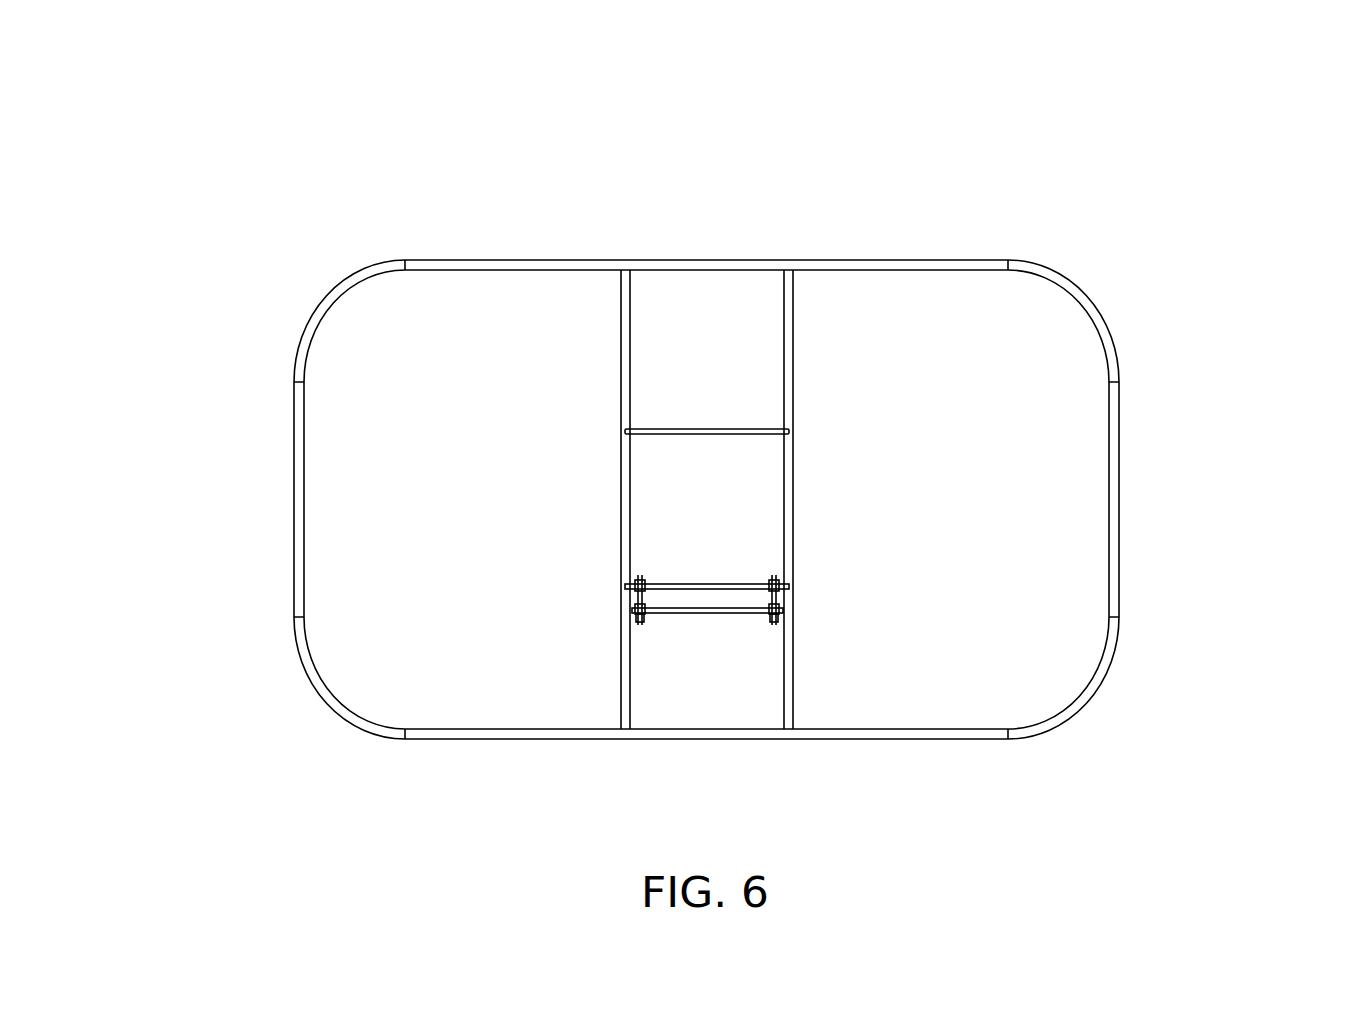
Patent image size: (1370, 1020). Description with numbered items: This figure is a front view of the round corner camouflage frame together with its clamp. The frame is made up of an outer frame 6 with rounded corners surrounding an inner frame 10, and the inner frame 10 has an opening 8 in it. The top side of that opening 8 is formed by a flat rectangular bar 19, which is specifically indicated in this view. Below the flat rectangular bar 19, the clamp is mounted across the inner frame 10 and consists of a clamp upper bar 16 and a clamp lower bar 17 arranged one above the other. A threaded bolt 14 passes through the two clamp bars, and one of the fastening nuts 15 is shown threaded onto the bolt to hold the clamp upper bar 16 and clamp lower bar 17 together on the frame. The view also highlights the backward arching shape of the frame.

The outer frame 6 is at (595, 259).
The opening 8 is at (706, 504).
The inner frame 10 is at (622, 415).
The threaded bolt 14 is at (780, 613).
The fastening nut 15 is at (637, 595).
The clamp upper bar 16 is at (695, 586).
The clamp lower bar 17 is at (708, 612).
The flat rectangular bar 19 is at (652, 432).